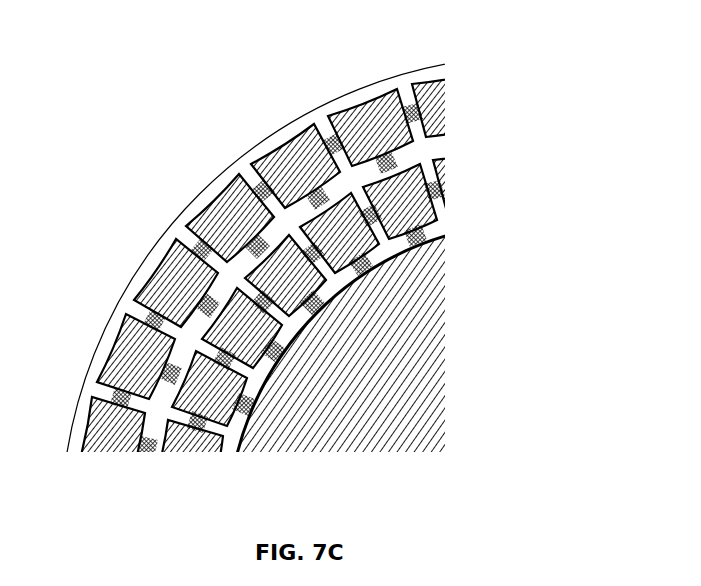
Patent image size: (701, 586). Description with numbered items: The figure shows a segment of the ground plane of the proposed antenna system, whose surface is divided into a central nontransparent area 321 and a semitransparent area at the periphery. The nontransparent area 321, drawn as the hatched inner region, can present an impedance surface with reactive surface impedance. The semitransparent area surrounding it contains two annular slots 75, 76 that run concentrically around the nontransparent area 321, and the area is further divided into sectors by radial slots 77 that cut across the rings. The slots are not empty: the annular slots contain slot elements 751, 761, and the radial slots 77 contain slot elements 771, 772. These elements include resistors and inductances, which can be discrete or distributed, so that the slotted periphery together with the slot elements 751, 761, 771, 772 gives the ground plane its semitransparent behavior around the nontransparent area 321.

The nontransparent area 321 is at (420, 405).
The annular slot 76 is at (438, 143).
The annular slot 75 is at (435, 228).
The slot element 761 is at (165, 383).
The slot element 751 is at (242, 407).
The radial slot 77 is at (322, 122).
The slot element 772 is at (257, 178).
The slot element 771 is at (203, 250).